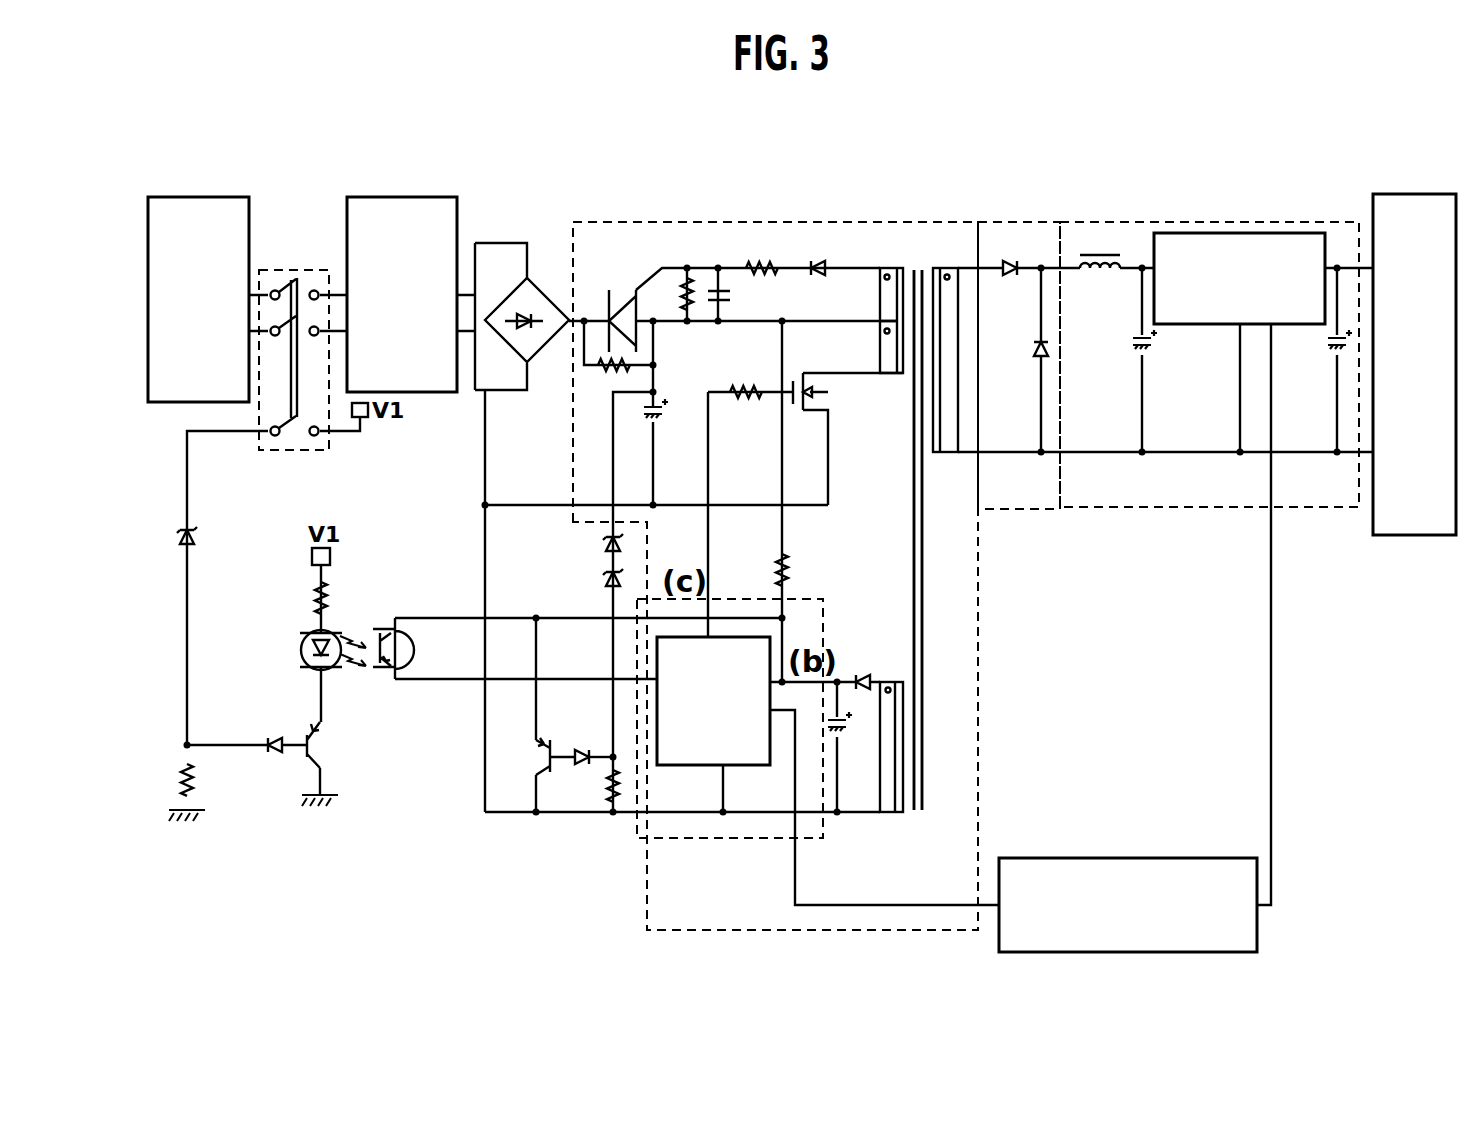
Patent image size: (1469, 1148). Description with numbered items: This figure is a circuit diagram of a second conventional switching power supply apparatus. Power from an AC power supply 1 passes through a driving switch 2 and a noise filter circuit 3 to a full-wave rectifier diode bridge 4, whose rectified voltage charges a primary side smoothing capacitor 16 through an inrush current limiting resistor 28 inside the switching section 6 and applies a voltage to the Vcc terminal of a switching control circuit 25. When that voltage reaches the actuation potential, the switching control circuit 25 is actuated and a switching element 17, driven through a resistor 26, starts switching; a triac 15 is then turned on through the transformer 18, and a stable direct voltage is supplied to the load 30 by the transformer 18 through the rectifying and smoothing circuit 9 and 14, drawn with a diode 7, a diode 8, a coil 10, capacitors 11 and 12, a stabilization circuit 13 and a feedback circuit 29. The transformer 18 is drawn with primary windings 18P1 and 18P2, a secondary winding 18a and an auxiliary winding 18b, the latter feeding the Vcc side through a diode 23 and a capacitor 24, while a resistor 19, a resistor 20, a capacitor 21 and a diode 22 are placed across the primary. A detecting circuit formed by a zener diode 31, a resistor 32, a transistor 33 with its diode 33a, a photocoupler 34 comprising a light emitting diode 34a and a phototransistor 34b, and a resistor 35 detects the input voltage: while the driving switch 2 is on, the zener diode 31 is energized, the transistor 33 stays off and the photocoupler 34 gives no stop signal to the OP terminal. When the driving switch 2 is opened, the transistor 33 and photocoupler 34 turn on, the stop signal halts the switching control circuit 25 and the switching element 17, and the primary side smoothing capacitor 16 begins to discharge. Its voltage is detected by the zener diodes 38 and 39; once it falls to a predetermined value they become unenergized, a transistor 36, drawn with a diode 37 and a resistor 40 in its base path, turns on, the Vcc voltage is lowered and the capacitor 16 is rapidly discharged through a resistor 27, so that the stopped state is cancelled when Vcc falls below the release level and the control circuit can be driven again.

The AC power supply 1 is at (199, 197).
The driving switch 2 is at (284, 270).
The noise filter circuit 3 is at (397, 197).
The full-wave rectifier diode bridge 4 is at (542, 284).
The switching power supply section 6 is at (637, 222).
The rectifying diode 7 is at (1008, 262).
The diode 8 is at (1035, 358).
The rectifying and smoothing circuit 9 is at (1020, 509).
The choke coil 10 is at (1101, 256).
The smoothing capacitor 11 is at (1136, 352).
The output capacitor 12 is at (1334, 352).
The stabilization circuit 13 is at (1247, 233).
The rectifying and smoothing circuit 14 is at (1178, 507).
The triac 15 is at (620, 290).
The primary side smoothing capacitor 16 is at (660, 425).
The switching element 17 is at (808, 415).
The transformer 18 is at (940, 527).
The primary winding 18P1 is at (898, 268).
The primary winding 18P2 is at (888, 375).
The secondary winding 18a is at (946, 455).
The auxiliary winding 18b is at (893, 812).
The resistor 19 is at (684, 276).
The resistor 20 is at (733, 266).
The capacitor 21 is at (774, 265).
The diode 22 is at (824, 266).
The diode 23 is at (866, 675).
The capacitor 24 is at (846, 735).
The switching control circuit 25 is at (700, 767).
The gate resistor 26 is at (748, 400).
The resistor 27 is at (790, 556).
The inrush current limiting resistor 28 is at (613, 375).
The feedback circuit 29 is at (1168, 858).
The load 30 is at (1414, 535).
The zener diode 31 is at (197, 535).
The resistor 32 is at (178, 781).
The transistor 33 is at (315, 752).
The diode 33a is at (272, 758).
The photocoupler 34 is at (306, 636).
The light emitting diode 34a is at (298, 648).
The phototransistor 34b is at (384, 672).
The resistor 35 is at (312, 594).
The transistor 36 is at (538, 750).
The diode 37 is at (580, 748).
The zener diode 38 is at (604, 583).
The zener diode 39 is at (604, 541).
The resistor 40 is at (606, 812).